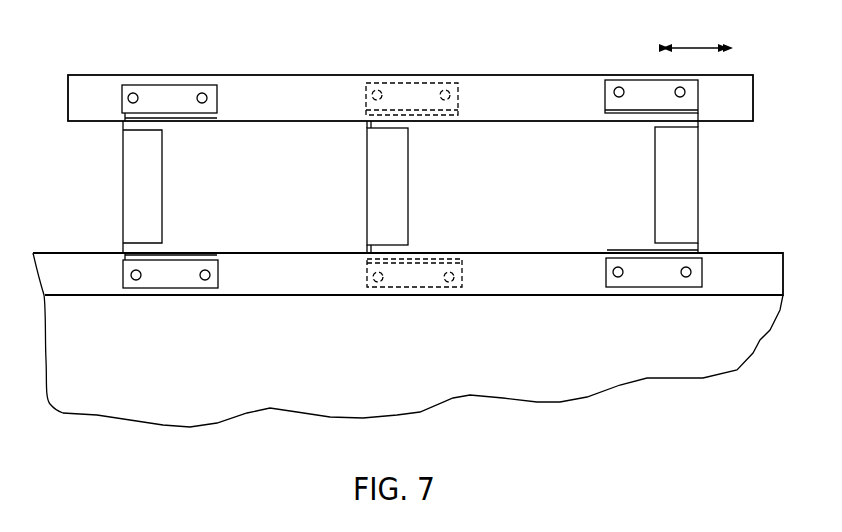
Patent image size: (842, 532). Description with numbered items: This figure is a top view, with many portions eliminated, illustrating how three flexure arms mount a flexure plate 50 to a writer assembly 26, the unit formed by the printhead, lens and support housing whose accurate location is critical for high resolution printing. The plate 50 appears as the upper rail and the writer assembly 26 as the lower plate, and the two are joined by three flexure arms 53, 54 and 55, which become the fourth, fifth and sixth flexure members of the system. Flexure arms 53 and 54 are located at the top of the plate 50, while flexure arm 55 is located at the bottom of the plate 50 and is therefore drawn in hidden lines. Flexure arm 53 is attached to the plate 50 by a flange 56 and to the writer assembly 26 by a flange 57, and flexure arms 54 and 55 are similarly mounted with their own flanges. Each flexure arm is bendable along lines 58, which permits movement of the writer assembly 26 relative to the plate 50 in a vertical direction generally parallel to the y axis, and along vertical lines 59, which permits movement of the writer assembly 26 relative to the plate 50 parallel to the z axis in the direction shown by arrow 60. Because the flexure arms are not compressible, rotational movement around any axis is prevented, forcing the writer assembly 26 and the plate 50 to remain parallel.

The writer assembly 26 is at (92, 272).
The flexure plate 50 is at (304, 92).
The flexure arm 53 is at (155, 196).
The flexure arm 54 is at (673, 140).
The flexure arm 55 is at (390, 148).
The flange 56 is at (178, 92).
The flange 57 is at (178, 284).
The lines 58 is at (196, 119).
The vertical lines 59 is at (709, 120).
The arrow 60 is at (695, 48).